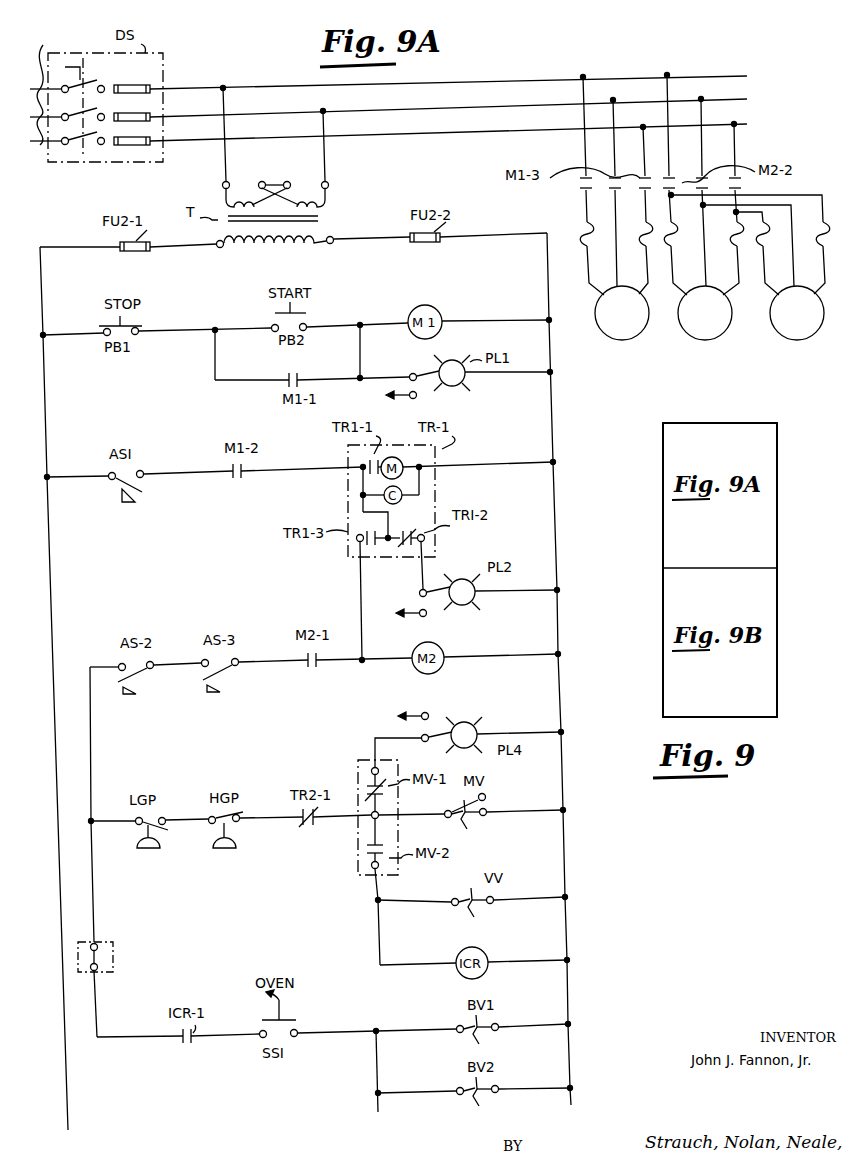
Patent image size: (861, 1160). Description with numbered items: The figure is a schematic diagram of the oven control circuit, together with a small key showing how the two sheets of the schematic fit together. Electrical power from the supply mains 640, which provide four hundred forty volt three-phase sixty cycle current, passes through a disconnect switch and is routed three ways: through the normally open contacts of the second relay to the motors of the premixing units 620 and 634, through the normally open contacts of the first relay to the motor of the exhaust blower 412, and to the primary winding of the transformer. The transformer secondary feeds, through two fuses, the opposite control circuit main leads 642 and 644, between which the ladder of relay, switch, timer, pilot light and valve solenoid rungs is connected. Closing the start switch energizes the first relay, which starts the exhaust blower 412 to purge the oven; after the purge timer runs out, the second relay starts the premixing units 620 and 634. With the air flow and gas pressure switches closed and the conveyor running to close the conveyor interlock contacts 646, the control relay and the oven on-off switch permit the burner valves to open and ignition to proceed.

The supply mains 640 is at (51, 88).
The control circuit main lead 642 is at (43, 291).
The control circuit main lead 644 is at (547, 281).
The conveyor interlock contacts 646 is at (113, 958).
The exhaust blower 412 is at (620, 340).
The premixing unit 620 is at (703, 340).
The premixing unit 634 is at (790, 338).